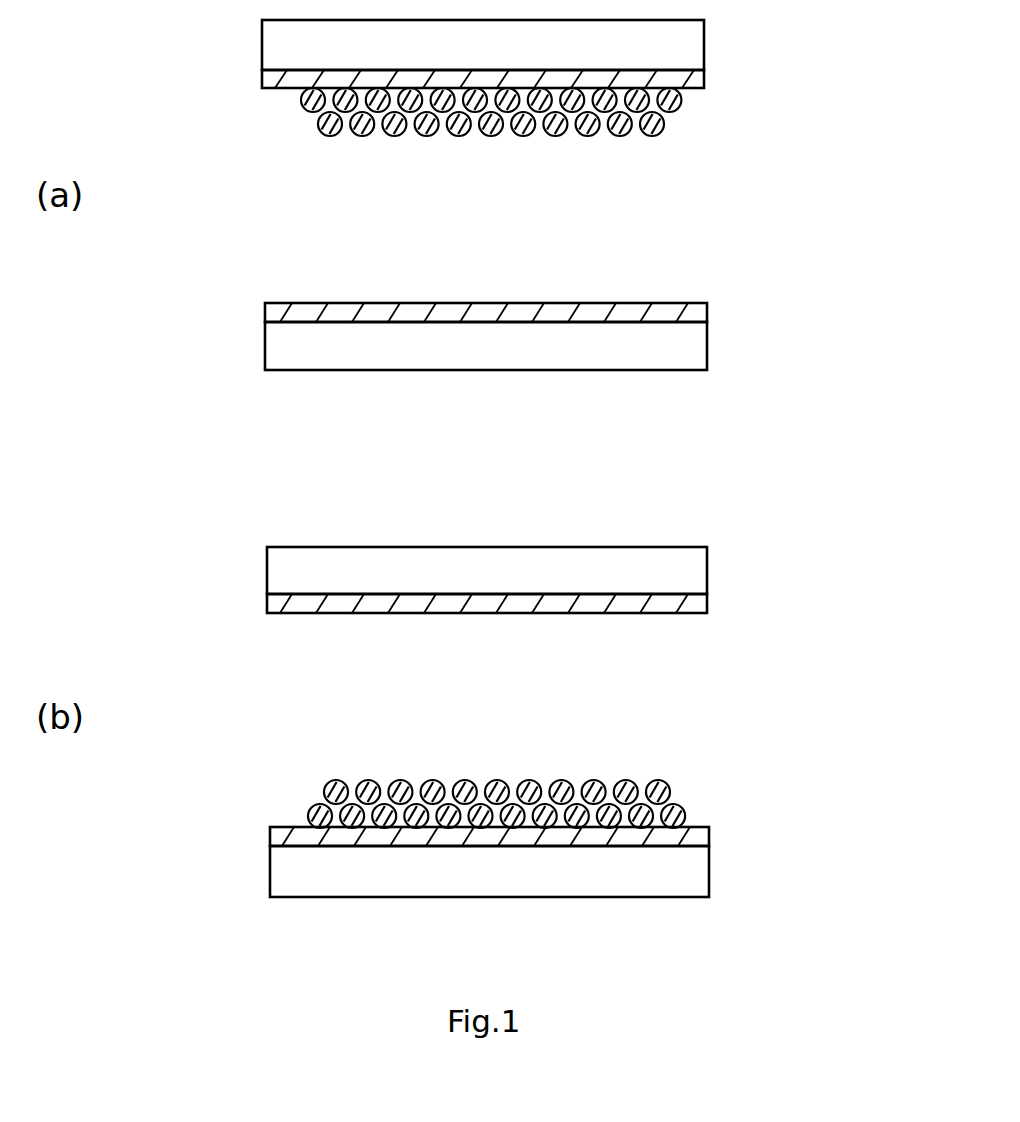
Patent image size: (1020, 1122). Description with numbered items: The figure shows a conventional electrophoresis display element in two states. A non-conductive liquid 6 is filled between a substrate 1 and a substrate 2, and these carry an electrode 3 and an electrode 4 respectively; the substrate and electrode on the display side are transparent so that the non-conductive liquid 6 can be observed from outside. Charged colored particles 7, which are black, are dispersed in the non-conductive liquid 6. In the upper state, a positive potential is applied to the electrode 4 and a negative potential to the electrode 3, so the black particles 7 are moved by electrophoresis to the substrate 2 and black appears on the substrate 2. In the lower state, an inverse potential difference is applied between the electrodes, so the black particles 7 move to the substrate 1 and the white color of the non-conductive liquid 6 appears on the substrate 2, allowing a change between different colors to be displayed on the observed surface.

The substrate 1 is at (692, 352).
The substrate 2 is at (690, 45).
The electrode 3 is at (262, 318).
The electrode 4 is at (262, 82).
The non-conductive liquid 6 is at (315, 203).
The charged colored particles 7 is at (672, 783).